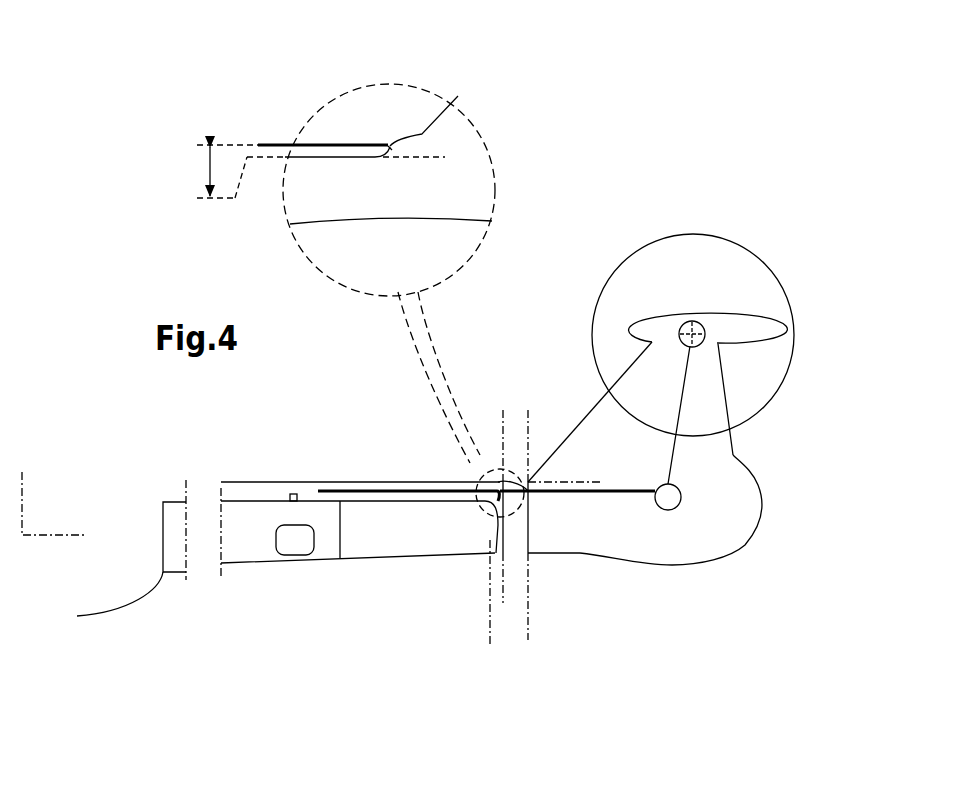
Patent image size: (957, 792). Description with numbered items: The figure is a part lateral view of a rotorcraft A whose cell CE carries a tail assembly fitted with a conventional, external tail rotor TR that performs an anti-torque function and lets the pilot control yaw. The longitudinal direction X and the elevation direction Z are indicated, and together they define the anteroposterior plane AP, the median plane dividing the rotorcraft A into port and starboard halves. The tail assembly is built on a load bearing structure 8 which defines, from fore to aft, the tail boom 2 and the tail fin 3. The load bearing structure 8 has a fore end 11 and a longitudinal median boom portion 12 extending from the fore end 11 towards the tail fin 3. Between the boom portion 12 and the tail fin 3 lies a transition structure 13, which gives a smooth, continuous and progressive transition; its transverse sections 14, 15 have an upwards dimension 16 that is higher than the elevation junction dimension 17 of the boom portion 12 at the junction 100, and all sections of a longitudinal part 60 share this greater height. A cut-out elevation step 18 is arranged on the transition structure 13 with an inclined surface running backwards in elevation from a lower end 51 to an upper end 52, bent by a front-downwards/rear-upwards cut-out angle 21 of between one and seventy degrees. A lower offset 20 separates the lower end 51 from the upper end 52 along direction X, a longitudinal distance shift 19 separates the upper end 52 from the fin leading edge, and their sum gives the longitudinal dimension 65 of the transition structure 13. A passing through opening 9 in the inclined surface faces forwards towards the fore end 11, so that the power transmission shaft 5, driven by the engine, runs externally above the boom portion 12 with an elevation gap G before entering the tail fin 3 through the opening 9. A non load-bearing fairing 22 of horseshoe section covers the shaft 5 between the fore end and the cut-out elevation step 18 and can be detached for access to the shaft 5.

The tail boom 2 is at (250, 558).
The tail fin 3 is at (730, 443).
The power transmission shaft 5 is at (357, 481).
The load bearing structure 8 is at (708, 568).
The passing through opening 9 is at (495, 487).
The fore end 11 is at (163, 548).
The longitudinal median boom portion 12 is at (327, 570).
The transition structure 13 is at (515, 463).
The transverse section 14 is at (508, 538).
The transverse section 15 is at (530, 520).
The upwards dimension 16 is at (580, 484).
The elevation junction dimension 17 is at (468, 505).
The cut-out elevation step 18 is at (378, 296).
The longitudinal distance shift 19 is at (478, 415).
The lower offset 20 is at (524, 592).
The cut-out angle 21 is at (400, 148).
The non load-bearing fairing 22 is at (256, 482).
The lower end 51 is at (385, 150).
The upper end 52 is at (372, 138).
The longitudinal part 60 is at (518, 538).
The longitudinal dimension 65 is at (488, 633).
The junction 100 is at (491, 553).
The rotorcraft A is at (408, 406).
The elevation gap G is at (312, 171).
The tail rotor TR is at (705, 233).
The elevation direction Z is at (562, 330).
The longitudinal direction X is at (208, 535).
The anteroposterior plane AP is at (53, 503).
The cell CE is at (107, 611).